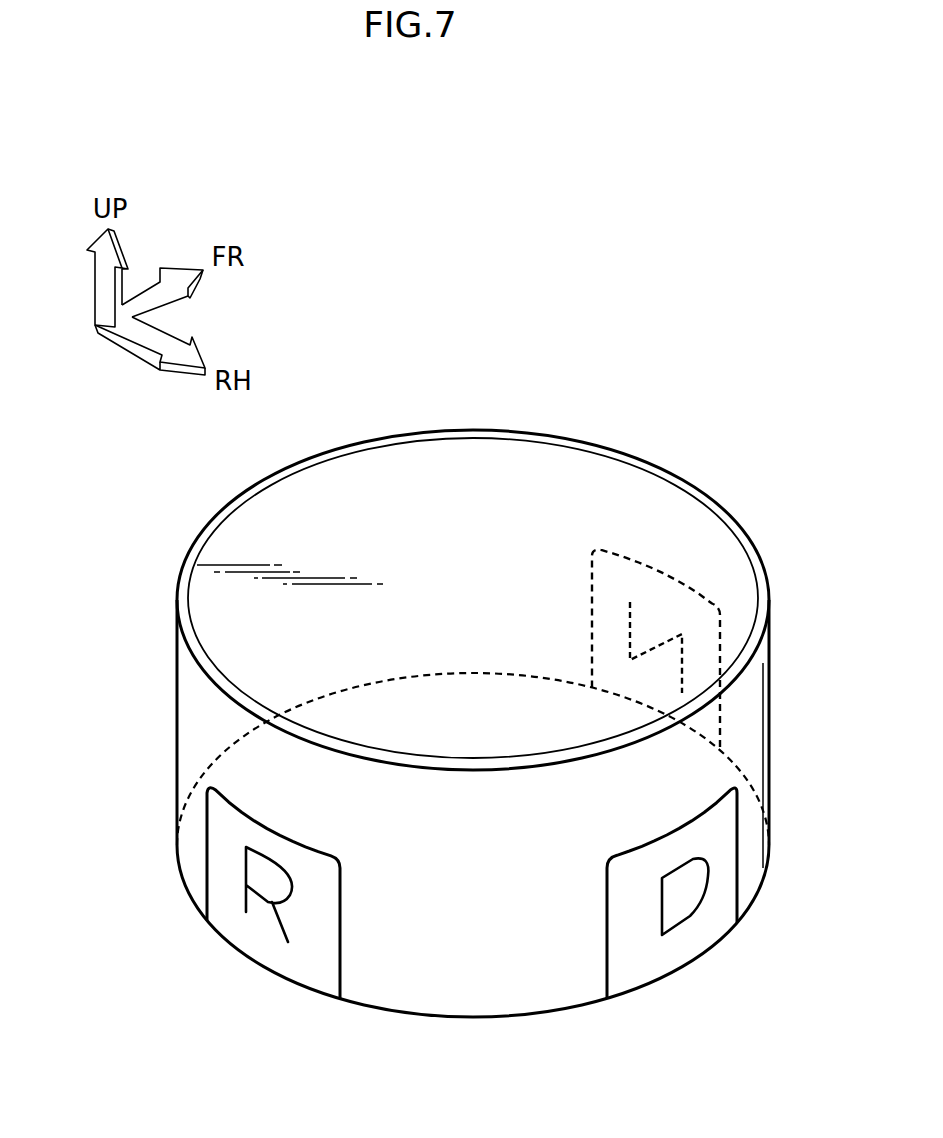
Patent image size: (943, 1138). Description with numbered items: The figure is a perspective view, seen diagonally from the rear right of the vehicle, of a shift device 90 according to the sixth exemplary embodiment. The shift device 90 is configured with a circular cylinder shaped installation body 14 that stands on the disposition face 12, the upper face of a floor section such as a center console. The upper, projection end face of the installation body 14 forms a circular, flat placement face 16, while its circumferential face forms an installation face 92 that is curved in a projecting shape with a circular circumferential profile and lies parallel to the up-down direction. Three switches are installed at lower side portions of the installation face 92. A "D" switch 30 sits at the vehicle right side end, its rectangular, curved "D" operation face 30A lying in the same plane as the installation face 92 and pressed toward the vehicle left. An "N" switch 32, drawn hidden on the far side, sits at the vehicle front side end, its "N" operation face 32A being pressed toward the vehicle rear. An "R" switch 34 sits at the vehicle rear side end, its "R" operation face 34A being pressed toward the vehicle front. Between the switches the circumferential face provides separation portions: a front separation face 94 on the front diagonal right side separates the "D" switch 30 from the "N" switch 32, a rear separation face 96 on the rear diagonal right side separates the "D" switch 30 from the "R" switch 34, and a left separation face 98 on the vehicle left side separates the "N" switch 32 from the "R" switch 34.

The disposition face 12 is at (463, 845).
The installation body 14 is at (500, 430).
The placement face 16 is at (248, 525).
The "D" switch 30 is at (672, 922).
The "D" operation face 30A is at (640, 965).
The "N" switch 32 is at (656, 614).
The "N" operation face 32A is at (655, 590).
The "R" switch 34 is at (273, 912).
The "R" operation face 34A is at (312, 967).
The shift device 90 is at (403, 394).
The installation face 92 is at (478, 802).
The front separation face 94 is at (745, 735).
The rear separation face 96 is at (480, 982).
The left separation face 98 is at (193, 702).